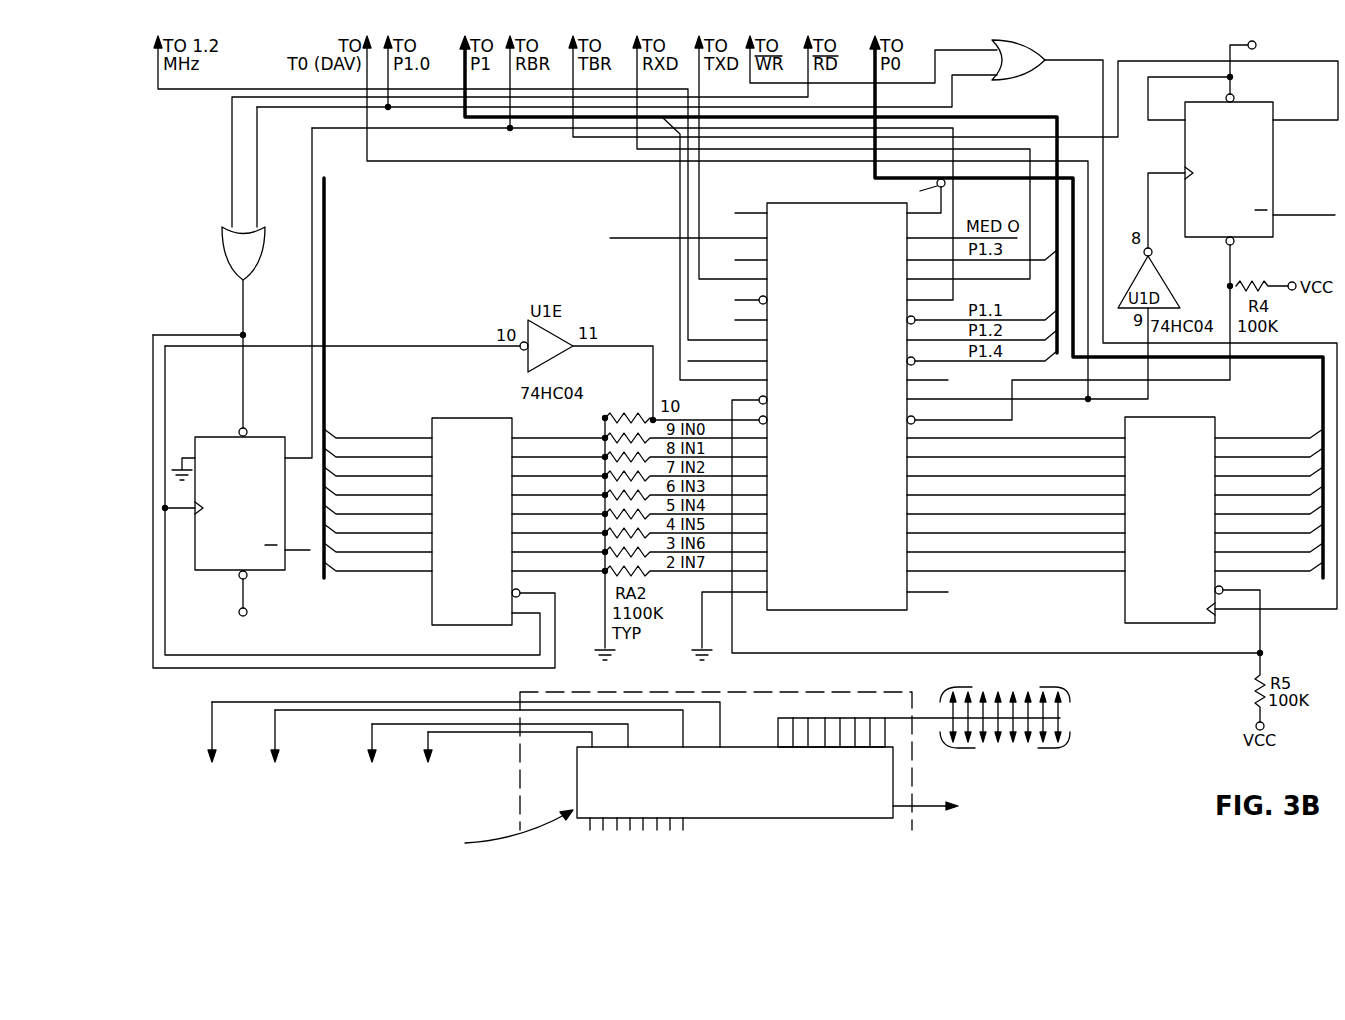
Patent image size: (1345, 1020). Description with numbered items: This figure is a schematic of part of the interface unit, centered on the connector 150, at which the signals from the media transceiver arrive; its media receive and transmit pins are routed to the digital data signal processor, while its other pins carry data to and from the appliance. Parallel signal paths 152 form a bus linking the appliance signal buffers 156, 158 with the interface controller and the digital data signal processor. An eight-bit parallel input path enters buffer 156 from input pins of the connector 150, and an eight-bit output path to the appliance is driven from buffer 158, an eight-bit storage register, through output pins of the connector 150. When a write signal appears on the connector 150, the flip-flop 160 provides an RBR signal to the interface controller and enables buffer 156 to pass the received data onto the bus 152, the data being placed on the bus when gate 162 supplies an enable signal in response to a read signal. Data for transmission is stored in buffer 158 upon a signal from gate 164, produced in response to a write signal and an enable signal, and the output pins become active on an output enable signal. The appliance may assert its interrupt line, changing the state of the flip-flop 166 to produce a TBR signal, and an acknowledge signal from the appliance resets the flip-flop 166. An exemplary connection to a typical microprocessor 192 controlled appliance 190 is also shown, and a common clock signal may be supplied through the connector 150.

The connector 150 is at (860, 269).
The parallel signal paths 152 is at (328, 252).
The appliance signal buffer 156 is at (445, 617).
The appliance signal buffer 158 is at (1135, 612).
The flip-flop 160 is at (215, 562).
The gate 162 is at (222, 235).
The gate 164 is at (1033, 73).
The flip-flop 166 is at (1268, 183).
The microprocessor controlled appliance 190 is at (808, 692).
The microprocessor 192 is at (780, 818).